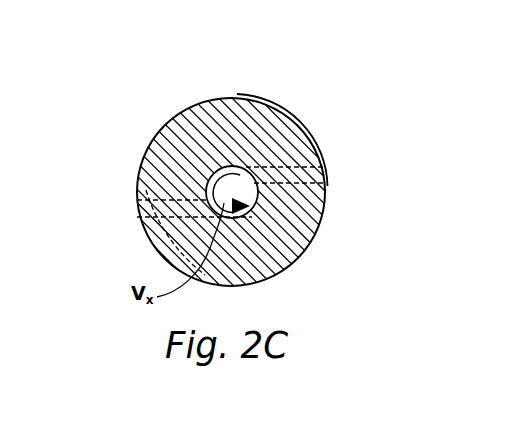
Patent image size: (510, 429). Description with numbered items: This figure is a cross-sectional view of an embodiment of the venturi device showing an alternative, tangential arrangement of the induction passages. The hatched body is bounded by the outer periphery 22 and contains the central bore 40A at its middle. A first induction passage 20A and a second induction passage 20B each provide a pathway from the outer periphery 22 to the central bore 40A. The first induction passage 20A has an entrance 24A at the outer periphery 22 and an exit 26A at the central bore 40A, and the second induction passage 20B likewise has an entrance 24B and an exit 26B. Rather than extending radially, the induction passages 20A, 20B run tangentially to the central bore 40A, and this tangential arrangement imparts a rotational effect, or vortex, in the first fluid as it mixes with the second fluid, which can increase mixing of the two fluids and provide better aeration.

The outer periphery 22 is at (180, 112).
The central bore 40A is at (232, 190).
The exit of the first induction passage 26A is at (290, 102).
The first induction passage 20A is at (320, 149).
The entrance of the first induction passage 24A is at (324, 172).
The second induction passage 20B is at (140, 173).
The entrance of the second induction passage 24B is at (140, 212).
The exit of the second induction passage 26B is at (165, 250).